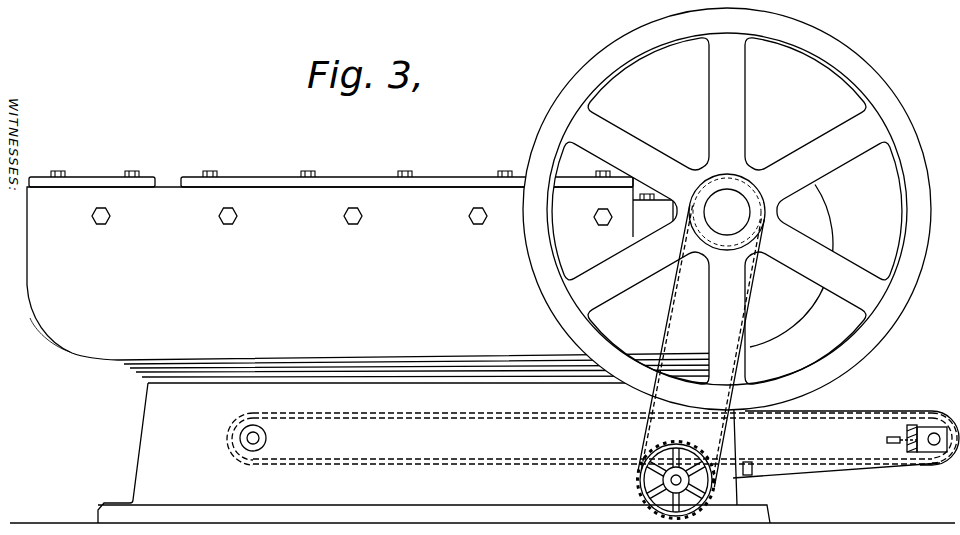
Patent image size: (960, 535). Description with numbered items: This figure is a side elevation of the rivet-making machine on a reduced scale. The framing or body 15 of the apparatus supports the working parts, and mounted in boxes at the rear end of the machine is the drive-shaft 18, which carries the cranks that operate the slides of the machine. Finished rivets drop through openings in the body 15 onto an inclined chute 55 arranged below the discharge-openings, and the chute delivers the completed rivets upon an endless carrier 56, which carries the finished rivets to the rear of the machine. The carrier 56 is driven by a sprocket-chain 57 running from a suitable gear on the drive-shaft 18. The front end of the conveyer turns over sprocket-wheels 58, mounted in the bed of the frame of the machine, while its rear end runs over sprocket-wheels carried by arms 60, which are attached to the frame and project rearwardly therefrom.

The framing or body 15 is at (430, 277).
The drive-shaft 18 is at (727, 212).
The inclined chute 55 is at (923, 420).
The endless carrier 56 is at (871, 414).
The sprocket-chain 57 is at (671, 322).
The sprocket-wheels 58 is at (267, 438).
The arms 60 is at (592, 439).